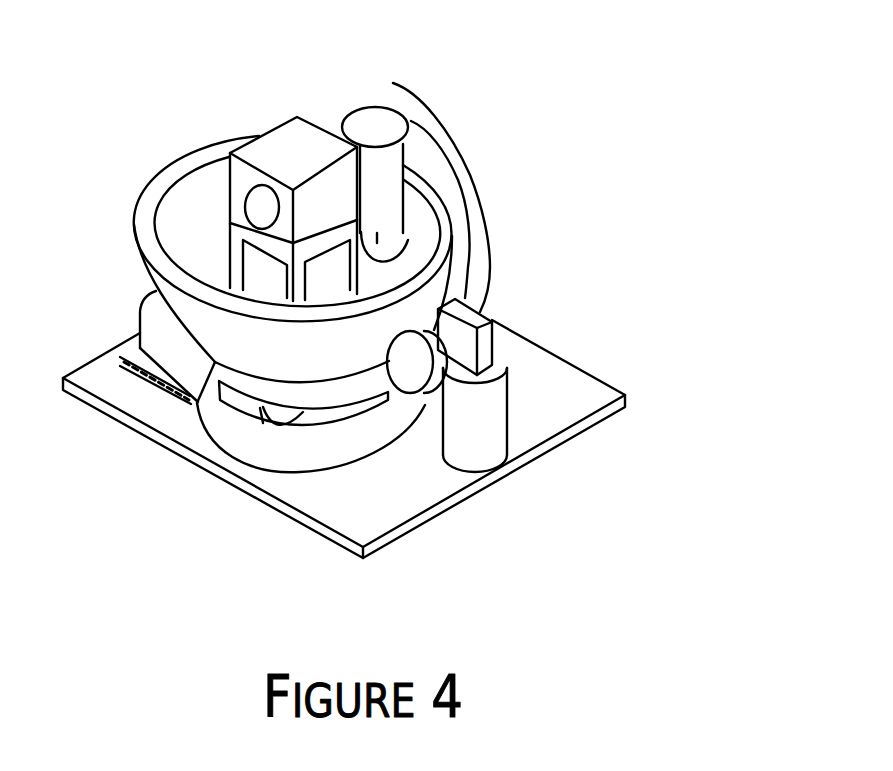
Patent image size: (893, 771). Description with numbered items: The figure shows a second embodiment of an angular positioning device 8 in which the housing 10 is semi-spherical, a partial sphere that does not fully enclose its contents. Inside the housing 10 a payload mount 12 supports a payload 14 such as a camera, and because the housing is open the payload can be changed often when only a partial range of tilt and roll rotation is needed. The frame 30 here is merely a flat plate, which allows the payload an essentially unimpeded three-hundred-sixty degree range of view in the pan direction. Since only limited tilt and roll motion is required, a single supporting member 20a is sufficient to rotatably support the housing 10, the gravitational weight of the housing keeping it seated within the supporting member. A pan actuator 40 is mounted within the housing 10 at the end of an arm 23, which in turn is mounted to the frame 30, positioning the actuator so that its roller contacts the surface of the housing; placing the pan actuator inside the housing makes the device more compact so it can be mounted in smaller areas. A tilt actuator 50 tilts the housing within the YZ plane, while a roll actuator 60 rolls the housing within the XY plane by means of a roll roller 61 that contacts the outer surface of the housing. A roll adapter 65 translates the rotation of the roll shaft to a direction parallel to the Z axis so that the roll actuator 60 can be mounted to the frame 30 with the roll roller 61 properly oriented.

The angular positioning device 8 is at (775, 520).
The housing 10 is at (147, 183).
The payload mount 12 is at (230, 253).
The payload 14 is at (284, 124).
The supporting member 20a is at (225, 430).
The arm 23 is at (467, 182).
The frame 30 is at (580, 362).
The pan actuator 40 is at (343, 95).
The tilt actuator 50 is at (128, 320).
The roll actuator 60 is at (531, 434).
The roll roller 61 is at (417, 377).
The roll adapter 65 is at (472, 317).